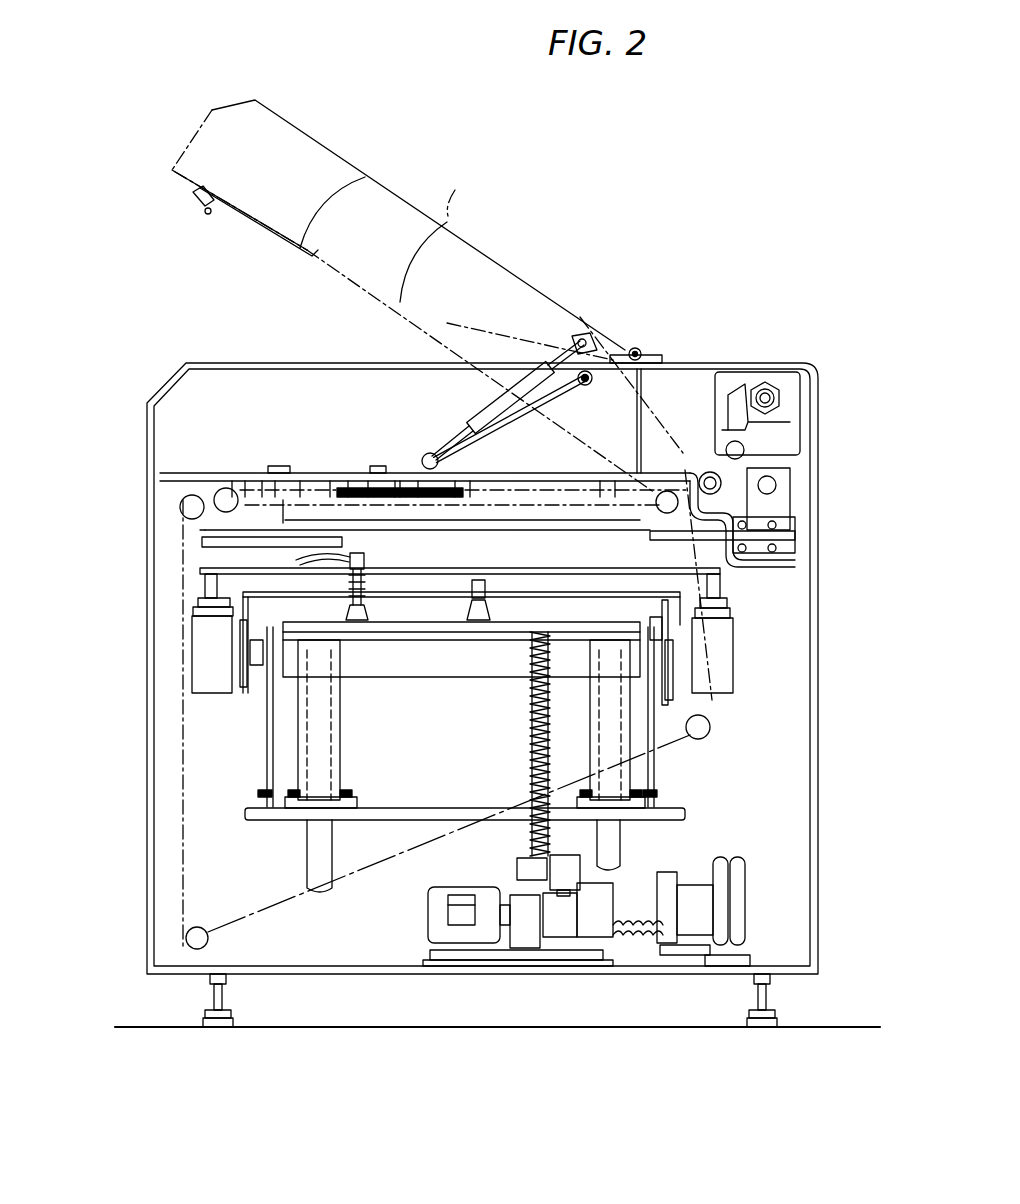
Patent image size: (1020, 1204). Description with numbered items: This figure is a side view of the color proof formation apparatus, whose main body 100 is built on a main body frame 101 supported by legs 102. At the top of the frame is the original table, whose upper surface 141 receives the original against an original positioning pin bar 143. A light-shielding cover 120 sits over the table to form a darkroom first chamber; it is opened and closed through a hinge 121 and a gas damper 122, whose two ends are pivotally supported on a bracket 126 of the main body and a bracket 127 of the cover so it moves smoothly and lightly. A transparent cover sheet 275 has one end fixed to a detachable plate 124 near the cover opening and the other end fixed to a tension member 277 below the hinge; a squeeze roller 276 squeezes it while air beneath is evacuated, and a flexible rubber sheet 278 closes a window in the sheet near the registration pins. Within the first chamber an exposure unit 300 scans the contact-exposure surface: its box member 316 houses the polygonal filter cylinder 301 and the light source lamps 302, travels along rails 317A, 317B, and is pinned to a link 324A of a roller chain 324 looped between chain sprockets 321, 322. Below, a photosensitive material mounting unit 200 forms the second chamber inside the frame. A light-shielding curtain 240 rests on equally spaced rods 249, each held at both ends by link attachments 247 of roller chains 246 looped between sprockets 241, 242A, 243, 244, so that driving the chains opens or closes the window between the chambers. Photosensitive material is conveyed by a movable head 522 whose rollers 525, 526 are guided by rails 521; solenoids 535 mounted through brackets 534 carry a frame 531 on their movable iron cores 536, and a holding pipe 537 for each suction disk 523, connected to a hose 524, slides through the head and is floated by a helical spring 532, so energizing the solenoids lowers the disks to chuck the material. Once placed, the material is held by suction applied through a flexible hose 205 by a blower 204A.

The main body 100 is at (822, 792).
The main body frame 101 is at (816, 921).
The legs 102 is at (770, 995).
The light-shielding cover 120 is at (178, 362).
The hinge 121 is at (638, 348).
The gas damper 122 is at (550, 420).
The plate 124 is at (192, 200).
The bracket 126 is at (430, 452).
The bracket 127 is at (590, 332).
The upper surface 141 is at (226, 488).
The original positioning pin bar 143 is at (275, 476).
The photosensitive material mounting unit 200 is at (450, 682).
The blower 204A is at (733, 857).
The flexible hose 205 is at (620, 905).
The light-shielding curtain 240 is at (365, 478).
The sprocket 241 is at (182, 504).
The sprocket 242A is at (186, 938).
The sprocket 243 is at (710, 730).
The sprocket 244 is at (666, 490).
The roller chains 246 is at (350, 478).
The link attachments 247 is at (393, 476).
The rods 249 is at (300, 478).
The transparent cover sheet 275 is at (459, 189).
The squeeze roller 276 is at (742, 453).
The tension member 277 is at (706, 470).
The flexible rubber sheet 278 is at (358, 180).
The exposure unit 300 is at (723, 362).
The polygonal cylinder 301 is at (762, 385).
The light source lamps 302 is at (780, 380).
The box member 316 is at (790, 494).
The rail 317A is at (790, 540).
The rail 317B is at (770, 570).
The chain sprocket 321 is at (778, 486).
The chain sprocket 322 is at (228, 492).
The roller chain 324 is at (750, 500).
The link 324A is at (745, 476).
The rails 521 is at (735, 686).
The movable head 522 is at (500, 672).
The suction disks 523 is at (472, 622).
The hose 524 is at (200, 568).
The roller 525 is at (715, 650).
The roller 526 is at (668, 690).
The frame 531 is at (503, 690).
The helical spring 532 is at (247, 623).
The brackets 534 is at (196, 604).
The solenoids 535 is at (212, 693).
The movable iron cores 536 is at (205, 586).
The holding pipe 537 is at (298, 556).